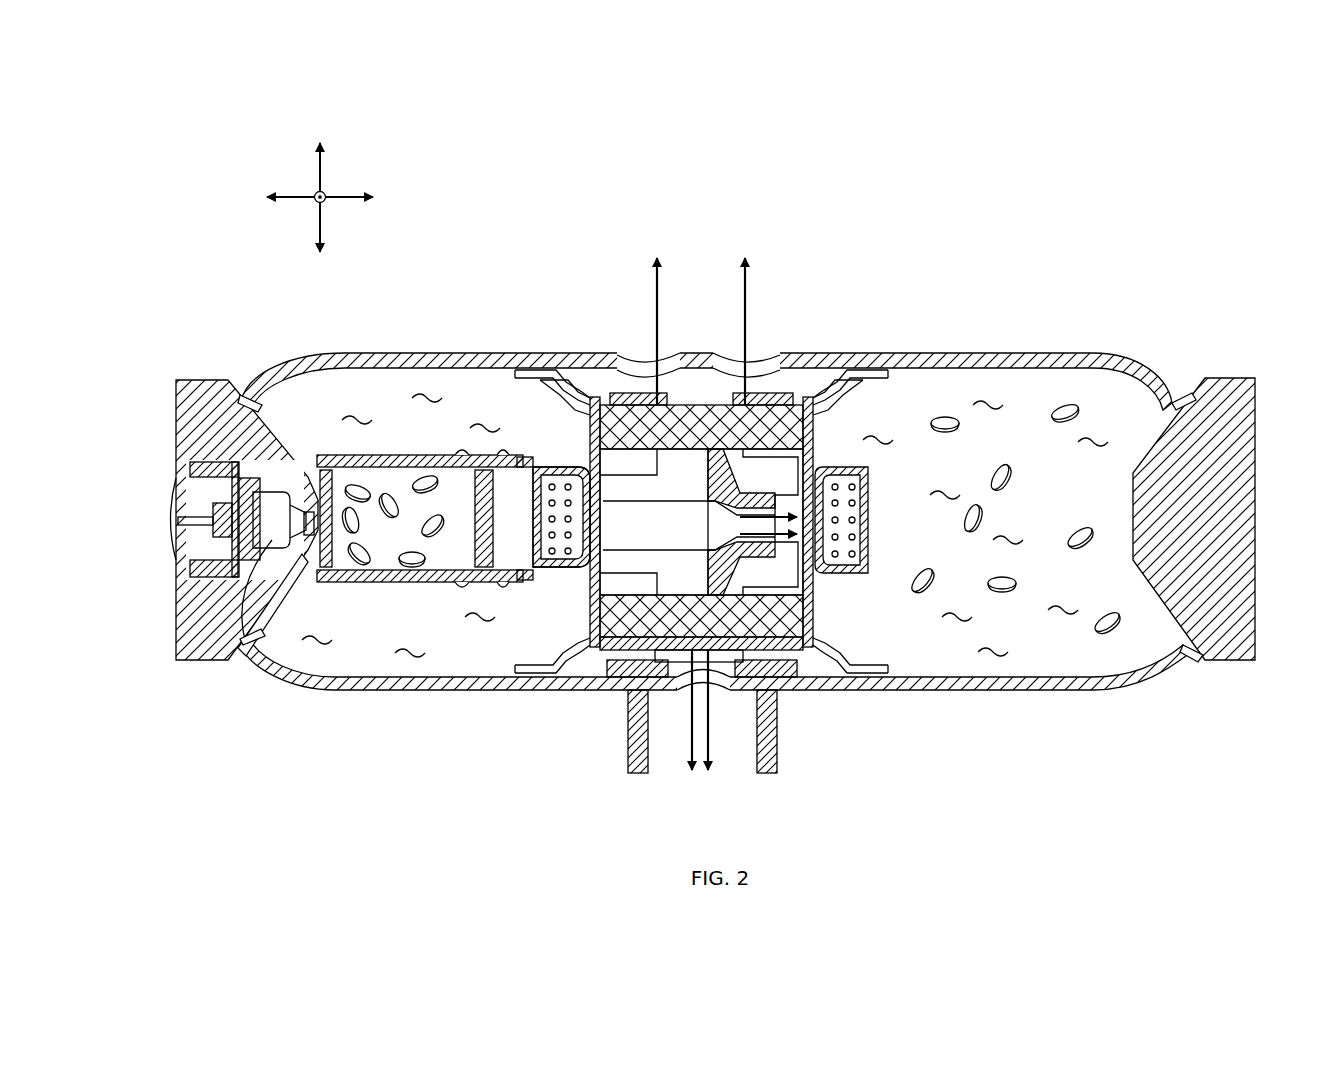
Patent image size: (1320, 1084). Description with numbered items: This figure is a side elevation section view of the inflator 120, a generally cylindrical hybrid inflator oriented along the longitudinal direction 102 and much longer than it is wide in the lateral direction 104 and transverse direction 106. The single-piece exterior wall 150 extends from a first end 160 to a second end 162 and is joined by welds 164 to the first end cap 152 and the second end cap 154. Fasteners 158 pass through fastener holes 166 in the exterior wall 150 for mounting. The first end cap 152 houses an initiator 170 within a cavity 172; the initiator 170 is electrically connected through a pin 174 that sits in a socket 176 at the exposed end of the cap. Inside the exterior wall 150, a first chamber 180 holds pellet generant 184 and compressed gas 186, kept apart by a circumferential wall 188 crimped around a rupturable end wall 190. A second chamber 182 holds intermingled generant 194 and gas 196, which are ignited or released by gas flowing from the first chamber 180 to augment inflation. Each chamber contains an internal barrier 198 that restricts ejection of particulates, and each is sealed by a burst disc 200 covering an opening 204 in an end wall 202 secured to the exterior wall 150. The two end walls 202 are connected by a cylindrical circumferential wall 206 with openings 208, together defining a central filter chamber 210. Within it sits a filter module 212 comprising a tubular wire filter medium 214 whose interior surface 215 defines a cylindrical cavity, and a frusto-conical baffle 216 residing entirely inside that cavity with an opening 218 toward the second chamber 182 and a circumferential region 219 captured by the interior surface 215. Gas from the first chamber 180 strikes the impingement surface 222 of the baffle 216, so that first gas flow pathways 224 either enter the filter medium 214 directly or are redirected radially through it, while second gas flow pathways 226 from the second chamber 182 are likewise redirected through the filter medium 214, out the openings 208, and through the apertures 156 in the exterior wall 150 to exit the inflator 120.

The longitudinal direction 102 is at (356, 190).
The lateral direction 104 is at (325, 204).
The transverse direction 106 is at (322, 182).
The inflator 120 is at (968, 185).
The exterior wall 150 is at (1008, 298).
The first end cap 152 is at (193, 350).
The second end cap 154 is at (1238, 318).
The apertures 156 is at (640, 362).
The fasteners 158 is at (628, 765).
The first end 160 is at (332, 690).
The second end 162 is at (1075, 692).
The welds 164 is at (1190, 396).
The fastener holes 166 is at (612, 684).
The initiator 170 is at (268, 505).
The cavity 172 is at (262, 590).
The pin 174 is at (180, 525).
The socket 176 is at (193, 470).
The first chamber 180 is at (401, 525).
The second chamber 182 is at (989, 528).
The generant 184 is at (410, 565).
The gas 186 is at (403, 691).
The circumferential wall 188 is at (428, 583).
The end wall 190 is at (524, 457).
The generant 194 is at (985, 520).
The gas 196 is at (990, 678).
The internal barrier 198 is at (550, 570).
The burst disc 200 is at (596, 514).
The end wall 202 is at (590, 627).
The opening 204 is at (596, 540).
The circumferential wall 206 is at (810, 385).
The openings 208 is at (733, 393).
The filter chamber 210 is at (745, 522).
The filter module 212 is at (816, 618).
The filter medium 214 is at (627, 400).
The interior surface 215 is at (606, 451).
The baffle 216 is at (745, 572).
The opening 218 is at (866, 505).
The circumferential region 219 is at (708, 680).
The impingement surface 222 is at (720, 540).
The first gas flow pathways 224 is at (648, 501).
The second gas flow pathways 226 is at (748, 275).